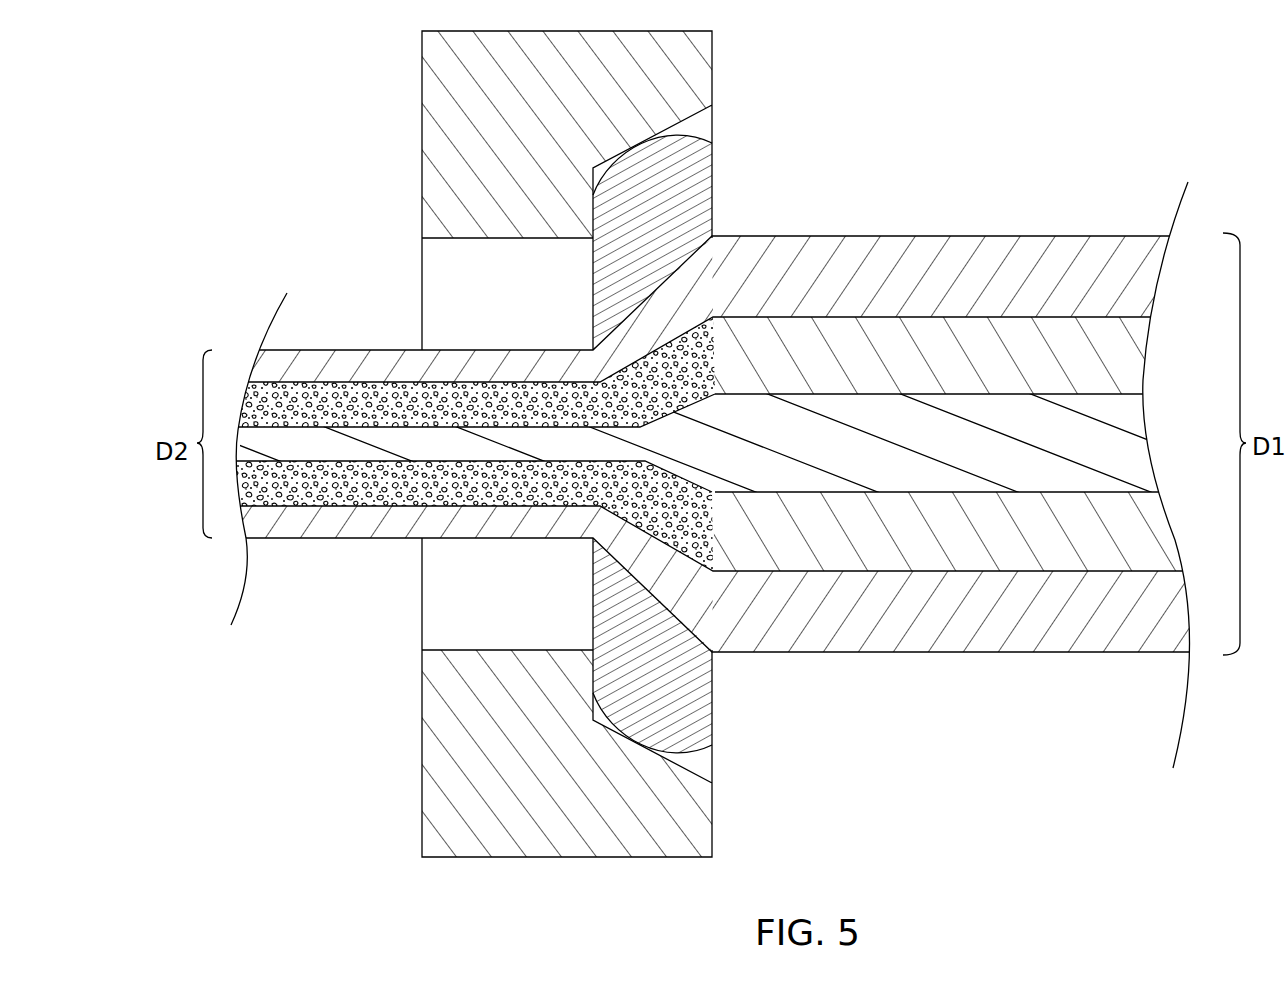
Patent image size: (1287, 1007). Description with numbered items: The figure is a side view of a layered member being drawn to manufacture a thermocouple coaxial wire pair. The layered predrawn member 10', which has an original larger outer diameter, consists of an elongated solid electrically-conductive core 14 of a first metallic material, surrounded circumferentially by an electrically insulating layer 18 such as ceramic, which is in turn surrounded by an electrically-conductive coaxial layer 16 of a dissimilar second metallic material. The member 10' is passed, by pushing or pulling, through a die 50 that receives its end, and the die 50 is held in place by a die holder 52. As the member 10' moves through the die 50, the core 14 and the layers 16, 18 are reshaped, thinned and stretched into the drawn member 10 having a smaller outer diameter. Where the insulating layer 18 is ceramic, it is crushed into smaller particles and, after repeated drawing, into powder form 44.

The drawn thermocouple coaxial wire pair member 10 is at (273, 539).
The layered (predrawn) member 10' is at (1059, 484).
The electrically-conductive core 14 is at (1138, 447).
The electrically-conductive coaxial layer 16 is at (1146, 283).
The electrically insulating layer 18 is at (1130, 352).
The powder form 44 is at (343, 502).
The die 50 is at (702, 178).
The die holder 52 is at (432, 135).